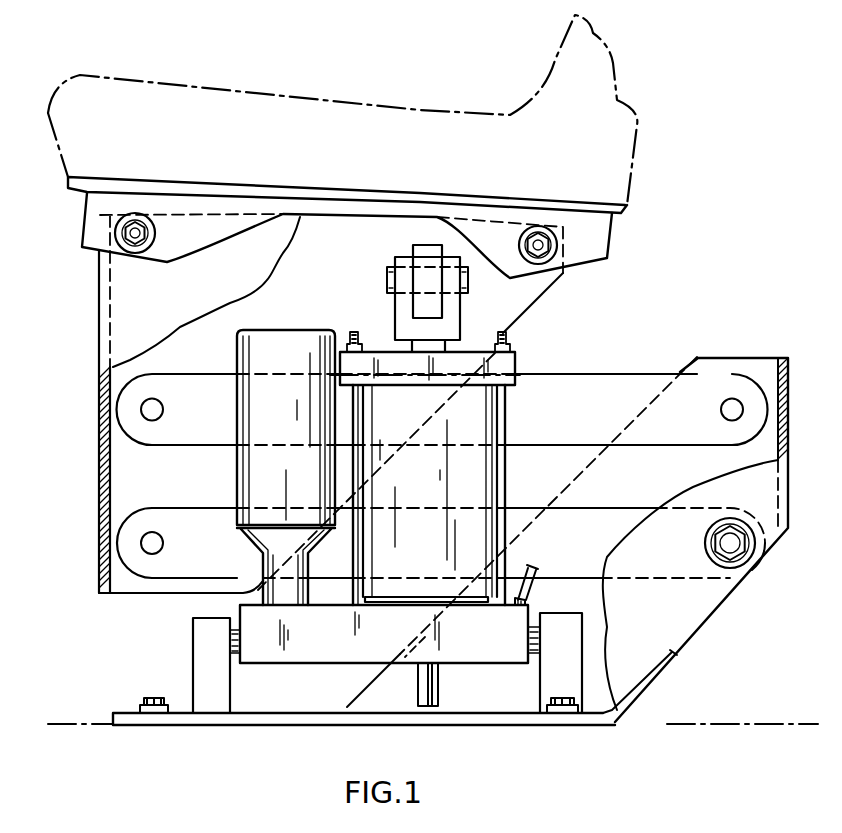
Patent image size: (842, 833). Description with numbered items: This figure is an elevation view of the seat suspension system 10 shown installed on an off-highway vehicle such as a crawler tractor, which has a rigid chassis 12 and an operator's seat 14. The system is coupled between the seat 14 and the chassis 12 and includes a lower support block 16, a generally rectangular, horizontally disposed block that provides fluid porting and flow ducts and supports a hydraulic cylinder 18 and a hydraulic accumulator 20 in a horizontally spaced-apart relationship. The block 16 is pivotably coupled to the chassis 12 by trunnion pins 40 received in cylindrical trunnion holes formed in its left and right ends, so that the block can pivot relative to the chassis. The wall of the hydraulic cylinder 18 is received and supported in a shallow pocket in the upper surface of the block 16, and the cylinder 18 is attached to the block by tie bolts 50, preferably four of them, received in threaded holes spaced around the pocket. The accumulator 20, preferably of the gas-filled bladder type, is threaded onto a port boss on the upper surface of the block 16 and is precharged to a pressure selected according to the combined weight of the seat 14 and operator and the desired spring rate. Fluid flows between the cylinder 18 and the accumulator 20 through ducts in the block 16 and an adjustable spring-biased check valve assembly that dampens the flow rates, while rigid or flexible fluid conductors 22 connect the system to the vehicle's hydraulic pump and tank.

The seat suspension system 10 is at (443, 510).
The rigid chassis 12 is at (690, 727).
The operator's seat 14 is at (448, 93).
The lower support block 16 is at (267, 664).
The hydraulic cylinder 18 is at (507, 420).
The hydraulic accumulator 20 is at (307, 330).
The fluid conductors 22 is at (525, 560).
The trunnion pins 40 is at (232, 641).
The tie bolts 50 is at (353, 458).